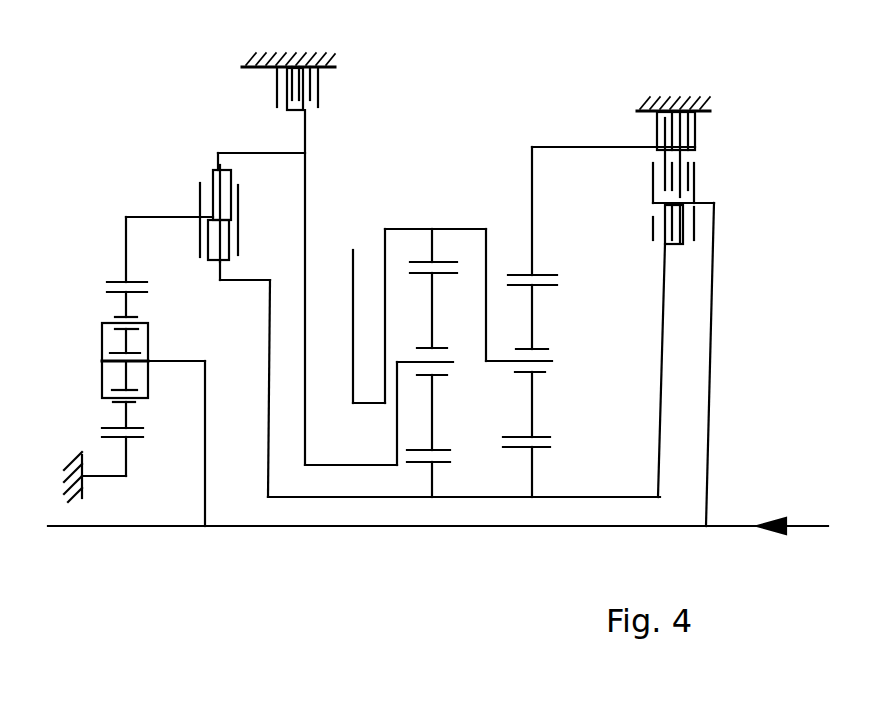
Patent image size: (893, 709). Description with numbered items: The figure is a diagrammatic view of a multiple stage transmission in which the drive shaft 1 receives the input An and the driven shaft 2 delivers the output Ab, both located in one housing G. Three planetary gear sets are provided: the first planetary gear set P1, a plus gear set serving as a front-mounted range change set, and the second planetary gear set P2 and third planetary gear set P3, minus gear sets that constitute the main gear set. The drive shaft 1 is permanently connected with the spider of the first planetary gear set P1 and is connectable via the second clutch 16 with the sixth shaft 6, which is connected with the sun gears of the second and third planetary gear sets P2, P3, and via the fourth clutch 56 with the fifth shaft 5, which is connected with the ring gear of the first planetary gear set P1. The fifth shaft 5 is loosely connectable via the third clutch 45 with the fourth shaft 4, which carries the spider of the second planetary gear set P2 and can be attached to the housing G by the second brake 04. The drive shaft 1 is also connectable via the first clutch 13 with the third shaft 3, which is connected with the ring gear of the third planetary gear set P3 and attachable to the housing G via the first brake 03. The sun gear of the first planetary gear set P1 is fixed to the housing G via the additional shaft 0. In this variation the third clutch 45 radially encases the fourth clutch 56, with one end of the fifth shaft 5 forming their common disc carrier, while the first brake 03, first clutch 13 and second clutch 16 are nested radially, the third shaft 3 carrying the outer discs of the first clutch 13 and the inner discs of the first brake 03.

The additional shaft 0 is at (123, 439).
The drive shaft 1 is at (153, 409).
The fifth shaft 5 is at (160, 254).
The third clutch 45 is at (252, 207).
The fourth clutch 56 is at (434, 358).
The second brake 04 is at (343, 266).
The driven shaft 2 is at (490, 294).
The fourth shaft 4 is at (442, 344).
The sixth shaft 6 is at (480, 434).
The third shaft 3 is at (601, 216).
The first brake 03 is at (653, 154).
The first clutch 13 is at (662, 343).
The second clutch 16 is at (652, 351).
The first planetary gear set P1 is at (162, 465).
The second planetary gear set P2 is at (461, 474).
The third planetary gear set P3 is at (502, 484).
The housing G is at (70, 470).
The driven shaft output Ab is at (327, 275).
The drive shaft input An is at (438, 511).